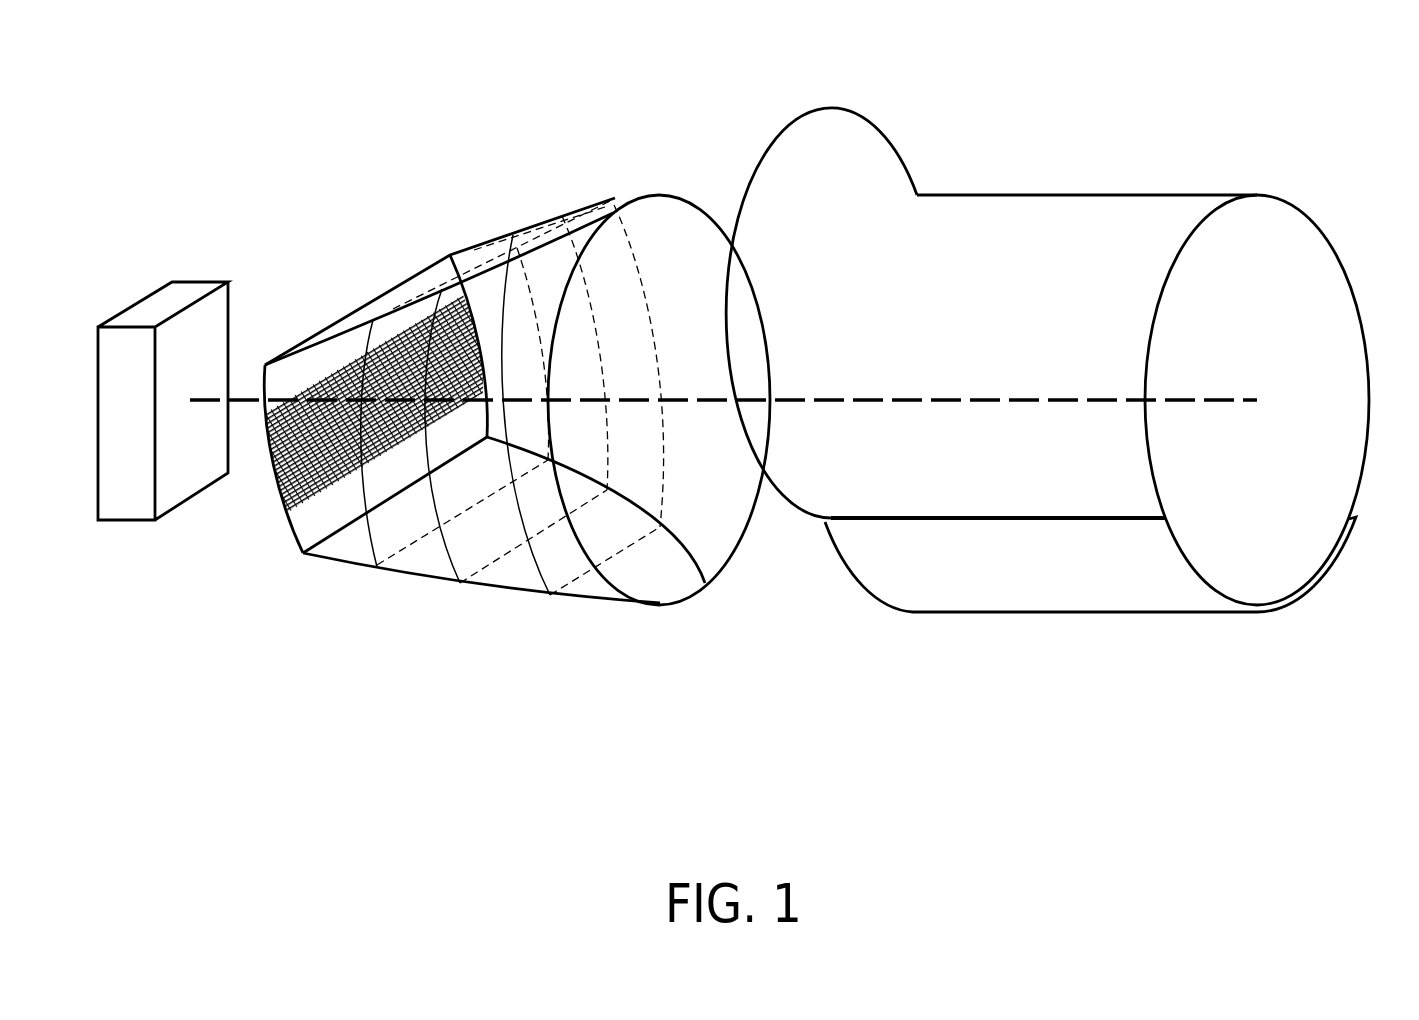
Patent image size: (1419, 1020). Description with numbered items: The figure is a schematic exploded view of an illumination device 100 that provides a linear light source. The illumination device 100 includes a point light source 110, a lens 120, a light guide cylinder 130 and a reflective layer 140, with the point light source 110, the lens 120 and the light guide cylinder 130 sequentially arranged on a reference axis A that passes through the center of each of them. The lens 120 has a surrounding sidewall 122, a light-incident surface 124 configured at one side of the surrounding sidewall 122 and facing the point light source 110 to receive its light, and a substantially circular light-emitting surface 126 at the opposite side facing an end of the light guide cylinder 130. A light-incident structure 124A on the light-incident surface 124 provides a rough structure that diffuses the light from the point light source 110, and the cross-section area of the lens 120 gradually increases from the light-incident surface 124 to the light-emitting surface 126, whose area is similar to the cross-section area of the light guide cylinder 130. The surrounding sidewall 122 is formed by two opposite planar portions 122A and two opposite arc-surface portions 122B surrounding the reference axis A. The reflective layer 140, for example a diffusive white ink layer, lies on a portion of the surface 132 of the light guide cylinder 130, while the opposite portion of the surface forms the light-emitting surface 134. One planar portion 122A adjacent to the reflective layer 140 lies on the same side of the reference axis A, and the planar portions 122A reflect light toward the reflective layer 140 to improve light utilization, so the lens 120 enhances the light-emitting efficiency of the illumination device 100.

The illumination device 100 is at (1361, 848).
The point light source 110 is at (131, 497).
The lens 120 is at (499, 453).
The surrounding sidewall 122 is at (514, 424).
The planar portions 122A is at (497, 560).
The arc-surface portions 122B is at (437, 550).
The light-incident surface 124 is at (421, 460).
The light-incident structure 124A is at (313, 493).
The light-emitting surface 126 is at (658, 459).
The light guide cylinder 130 is at (1062, 356).
The surface 132 is at (815, 485).
The light-emitting surface 134 is at (1096, 189).
The reflective layer 140 is at (1023, 595).
The reference axis A is at (1227, 397).